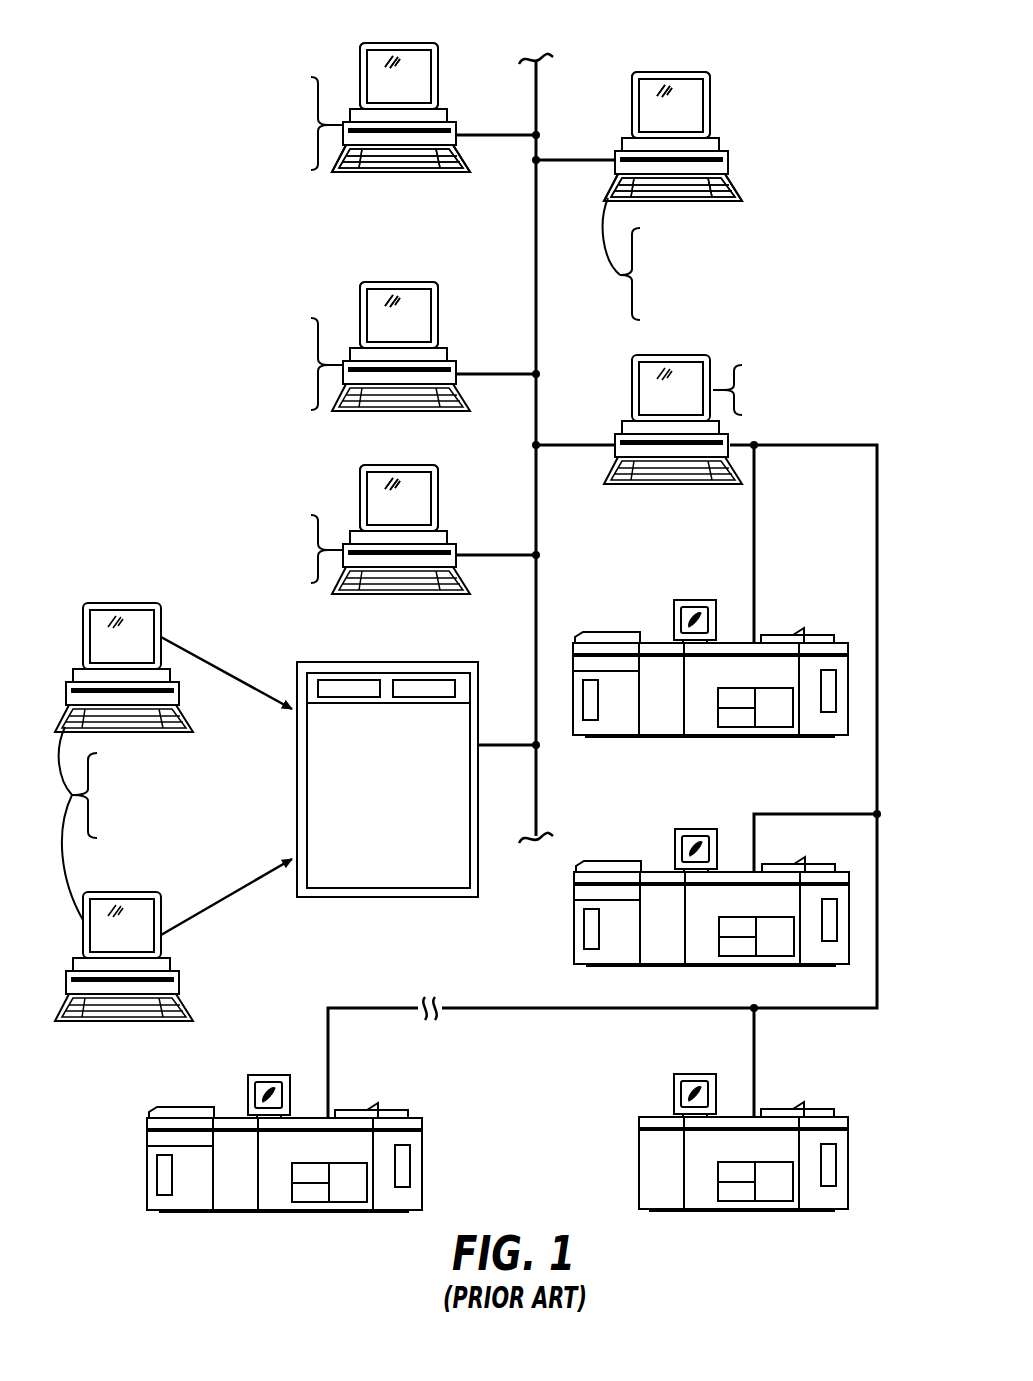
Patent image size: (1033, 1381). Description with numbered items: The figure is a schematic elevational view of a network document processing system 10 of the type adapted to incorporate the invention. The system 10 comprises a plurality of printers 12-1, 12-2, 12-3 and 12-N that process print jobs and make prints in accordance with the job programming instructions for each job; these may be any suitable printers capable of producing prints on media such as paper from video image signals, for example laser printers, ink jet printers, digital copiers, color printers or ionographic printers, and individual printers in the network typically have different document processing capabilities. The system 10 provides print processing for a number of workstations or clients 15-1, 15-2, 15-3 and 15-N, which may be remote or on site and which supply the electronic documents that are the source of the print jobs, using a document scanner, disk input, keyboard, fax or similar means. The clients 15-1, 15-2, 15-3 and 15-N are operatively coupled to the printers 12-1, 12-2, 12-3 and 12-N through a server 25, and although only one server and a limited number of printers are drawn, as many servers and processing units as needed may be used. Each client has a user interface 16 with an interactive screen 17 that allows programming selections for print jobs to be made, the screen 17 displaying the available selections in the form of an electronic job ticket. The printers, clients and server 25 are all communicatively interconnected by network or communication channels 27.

The network document processing system 10 is at (702, 38).
The printer 12-1 is at (645, 622).
The printer 12-2 is at (645, 846).
The printer 12-3 is at (646, 1102).
The printer 12-N is at (478, 1089).
The client 15-1 is at (514, 32).
The client 15-2 is at (519, 266).
The client 15-3 is at (519, 449).
The client 15-N is at (661, 68).
The user interface 16 is at (393, 180).
The interactive screen 17 is at (373, 52).
The server 25 is at (628, 370).
The network or communication channels 27 is at (536, 185).